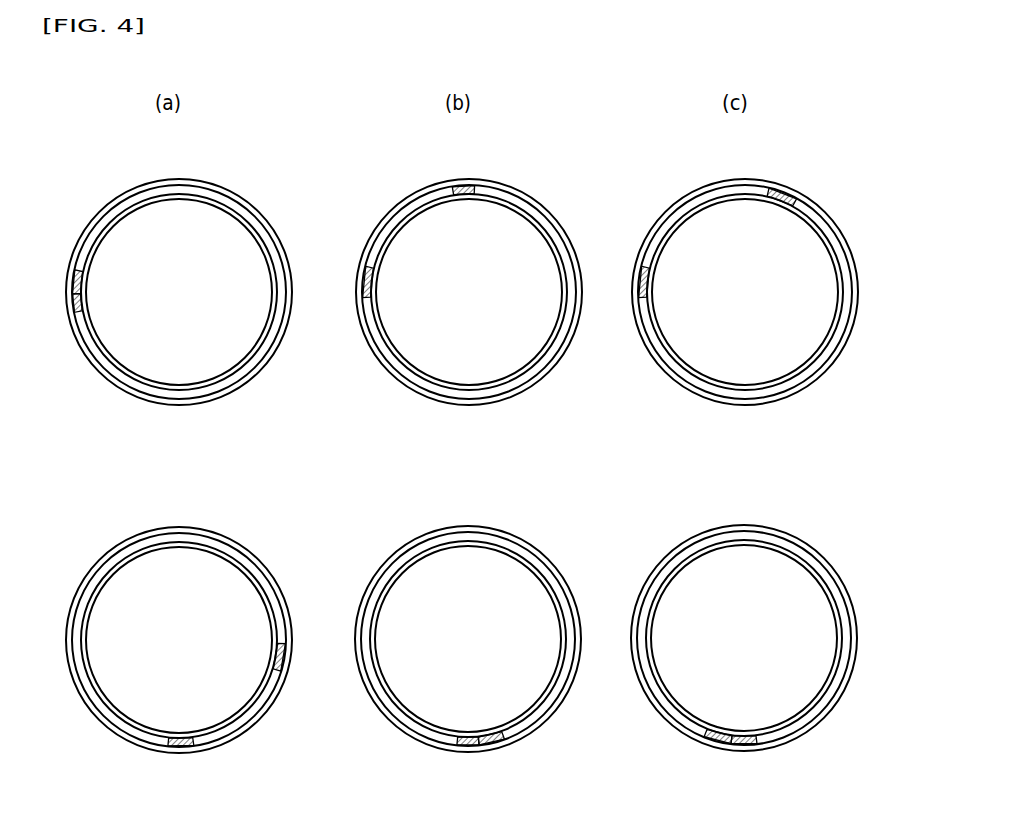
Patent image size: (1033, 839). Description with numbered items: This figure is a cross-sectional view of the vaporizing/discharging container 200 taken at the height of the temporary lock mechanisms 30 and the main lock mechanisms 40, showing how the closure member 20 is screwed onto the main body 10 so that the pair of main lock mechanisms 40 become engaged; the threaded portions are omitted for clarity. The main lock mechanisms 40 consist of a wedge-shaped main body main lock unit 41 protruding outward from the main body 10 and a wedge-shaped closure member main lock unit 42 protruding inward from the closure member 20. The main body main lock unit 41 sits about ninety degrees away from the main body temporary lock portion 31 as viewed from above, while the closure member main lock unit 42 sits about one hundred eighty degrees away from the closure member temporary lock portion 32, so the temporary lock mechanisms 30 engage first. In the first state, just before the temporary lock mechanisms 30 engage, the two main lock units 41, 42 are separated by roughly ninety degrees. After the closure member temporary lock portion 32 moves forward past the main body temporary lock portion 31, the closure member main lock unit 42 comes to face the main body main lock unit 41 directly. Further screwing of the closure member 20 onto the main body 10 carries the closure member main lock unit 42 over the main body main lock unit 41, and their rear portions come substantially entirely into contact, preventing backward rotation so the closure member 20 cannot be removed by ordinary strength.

The vaporizing/discharging container 200 is at (467, 459).
The main body 10 is at (462, 453).
The closure member 20 is at (472, 466).
The temporary lock mechanisms 30 is at (115, 420).
The main body temporary lock portion 31 is at (352, 343).
The closure member temporary lock portion 32 is at (472, 276).
The main lock mechanisms 40 is at (499, 726).
The main body main lock unit 41 is at (477, 773).
The closure member main lock unit 42 is at (528, 726).